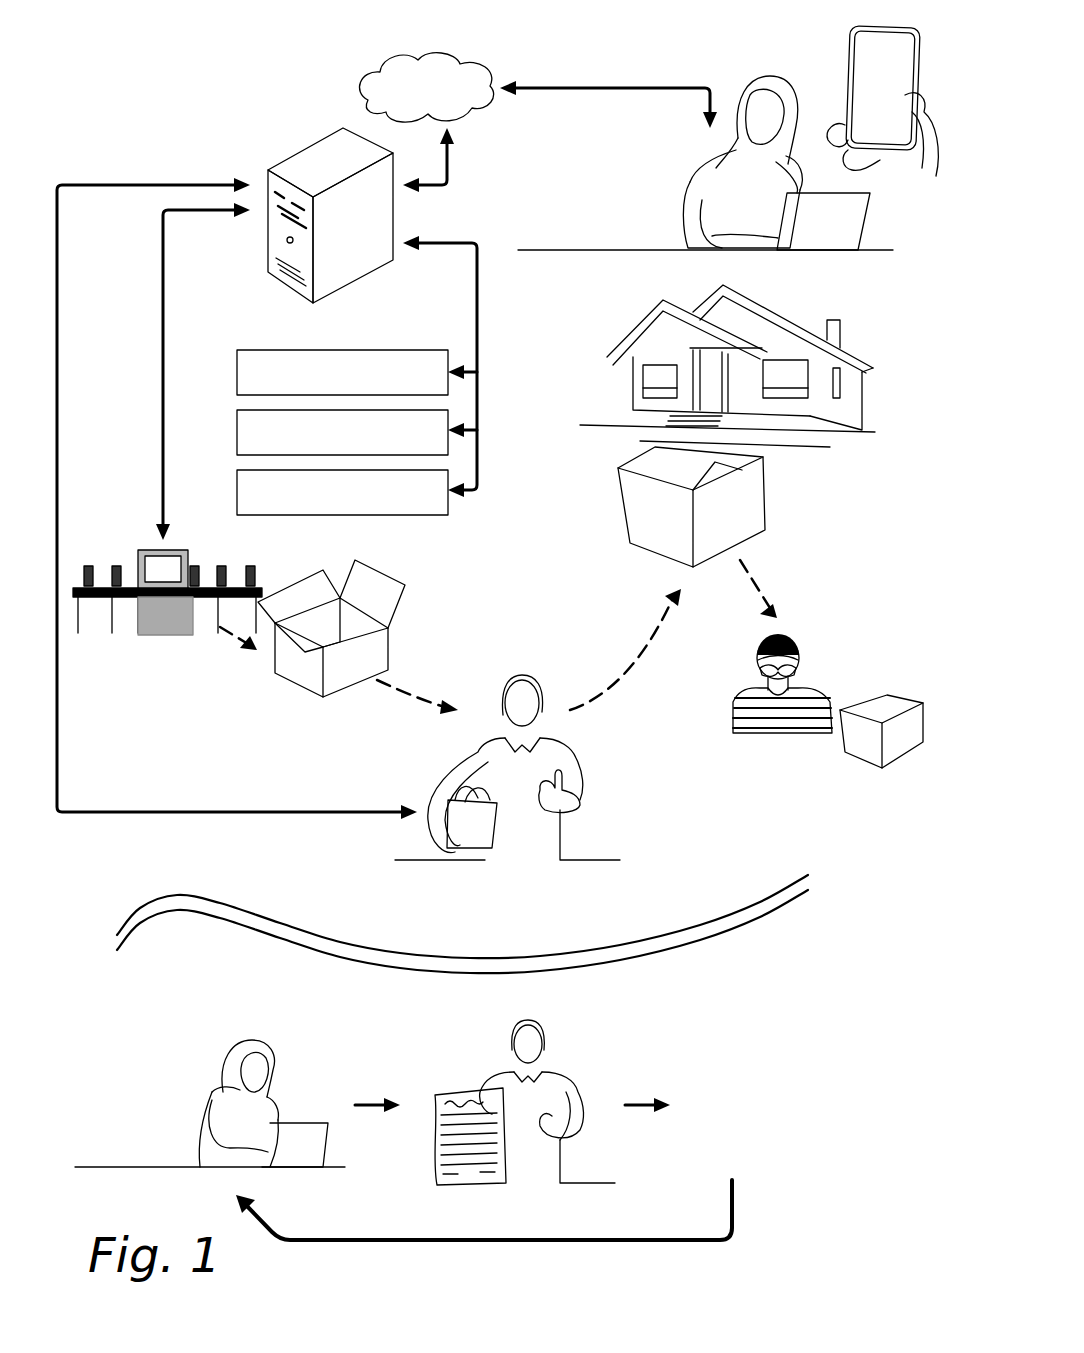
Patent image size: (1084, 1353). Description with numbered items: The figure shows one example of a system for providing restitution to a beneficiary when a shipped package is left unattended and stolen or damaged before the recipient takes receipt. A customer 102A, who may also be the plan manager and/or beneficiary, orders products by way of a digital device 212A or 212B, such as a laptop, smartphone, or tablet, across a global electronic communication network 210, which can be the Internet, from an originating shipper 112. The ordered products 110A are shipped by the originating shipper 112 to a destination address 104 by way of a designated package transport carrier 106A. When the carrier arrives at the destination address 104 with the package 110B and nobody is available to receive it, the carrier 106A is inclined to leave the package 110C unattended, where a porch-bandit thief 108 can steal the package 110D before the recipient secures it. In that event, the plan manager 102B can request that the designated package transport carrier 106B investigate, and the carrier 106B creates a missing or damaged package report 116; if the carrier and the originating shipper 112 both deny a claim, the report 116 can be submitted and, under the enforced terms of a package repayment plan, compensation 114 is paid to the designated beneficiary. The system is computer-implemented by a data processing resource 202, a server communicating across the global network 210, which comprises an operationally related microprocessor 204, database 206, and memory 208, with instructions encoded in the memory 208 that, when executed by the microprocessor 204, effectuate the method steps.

The customer 102A is at (705, 157).
The plan manager 102B is at (215, 1104).
The destination address 104 is at (638, 367).
The designated package transport carrier 106A is at (487, 755).
The designated package transport carrier 106B is at (552, 1096).
The porch-bandit thief 108 is at (757, 723).
The ordered products 110A is at (290, 670).
The package 110B is at (470, 838).
The package 110C is at (633, 514).
The package 110D is at (865, 748).
The originating shipper 112 is at (162, 617).
The compensation 114 is at (750, 1068).
The missing or damaged package report 116 is at (470, 1182).
The data processing resource 202 is at (296, 270).
The microprocessor 204 is at (330, 350).
The database 206 is at (420, 445).
The memory 208 is at (411, 505).
The global electronic communication network 210 is at (449, 107).
The digital device 212A is at (851, 232).
The digital device 212B is at (862, 35).